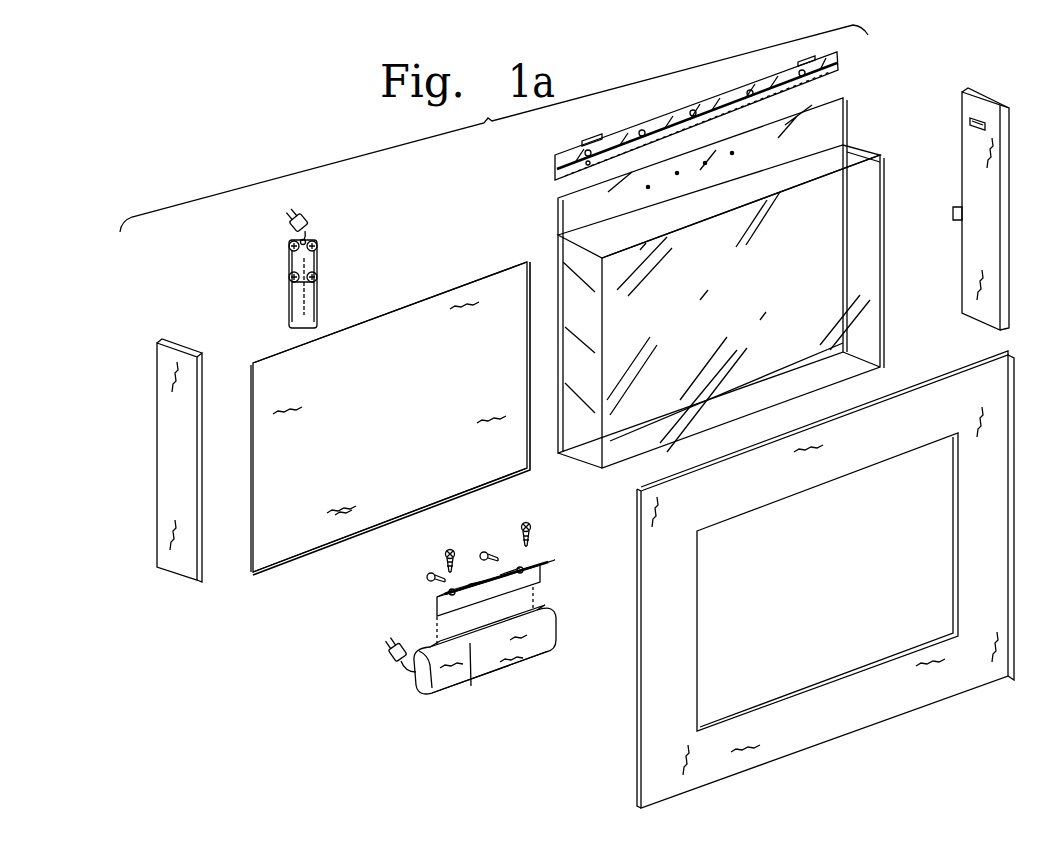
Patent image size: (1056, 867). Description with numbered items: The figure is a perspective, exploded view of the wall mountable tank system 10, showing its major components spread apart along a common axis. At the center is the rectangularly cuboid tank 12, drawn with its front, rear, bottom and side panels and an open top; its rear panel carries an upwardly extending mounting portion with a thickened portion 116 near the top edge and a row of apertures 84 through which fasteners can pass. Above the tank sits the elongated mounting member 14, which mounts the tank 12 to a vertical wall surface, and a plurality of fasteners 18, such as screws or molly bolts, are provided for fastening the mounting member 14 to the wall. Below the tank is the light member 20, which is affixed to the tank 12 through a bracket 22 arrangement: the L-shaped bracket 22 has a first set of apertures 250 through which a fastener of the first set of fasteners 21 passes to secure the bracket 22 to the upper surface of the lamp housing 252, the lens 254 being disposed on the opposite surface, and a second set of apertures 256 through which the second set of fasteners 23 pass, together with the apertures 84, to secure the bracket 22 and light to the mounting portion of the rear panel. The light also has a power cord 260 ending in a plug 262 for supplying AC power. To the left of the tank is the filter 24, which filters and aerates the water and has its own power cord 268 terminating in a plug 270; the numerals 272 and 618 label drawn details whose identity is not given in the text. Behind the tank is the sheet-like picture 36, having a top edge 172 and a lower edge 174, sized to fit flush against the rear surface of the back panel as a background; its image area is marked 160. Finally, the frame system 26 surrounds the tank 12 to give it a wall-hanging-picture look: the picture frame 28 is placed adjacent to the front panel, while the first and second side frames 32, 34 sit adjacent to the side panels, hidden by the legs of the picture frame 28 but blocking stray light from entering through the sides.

The wall mountable tank system 10 is at (390, 231).
The tank 12 is at (691, 270).
The mounting member 14 is at (660, 110).
The fasteners 18 is at (630, 166).
The light member 20 is at (462, 636).
The first set of fasteners 21 is at (446, 551).
The bracket 22 is at (480, 570).
The second set of fasteners 23 is at (532, 522).
The filter 24 is at (287, 287).
The frame system 26 is at (838, 579).
The picture frame 28 is at (992, 708).
The first side frame 32 is at (178, 338).
The second side frame 34 is at (1003, 93).
The picture 36 is at (390, 418).
The apertures 84 is at (734, 152).
The thickened portion 116 is at (556, 212).
The picture image 160 is at (400, 492).
The top edge 172 is at (318, 338).
The lower edge 174 is at (294, 560).
The first set of apertures 250 is at (542, 563).
The housing 252 is at (526, 656).
The lens 254 is at (512, 670).
The second set of apertures 256 is at (478, 598).
The power cord 260 is at (413, 672).
The plug 262 is at (395, 659).
The power cord 268 is at (310, 243).
The plug 270 is at (292, 223).
The rollers 272 is at (290, 277).
The top wall 618 is at (624, 238).